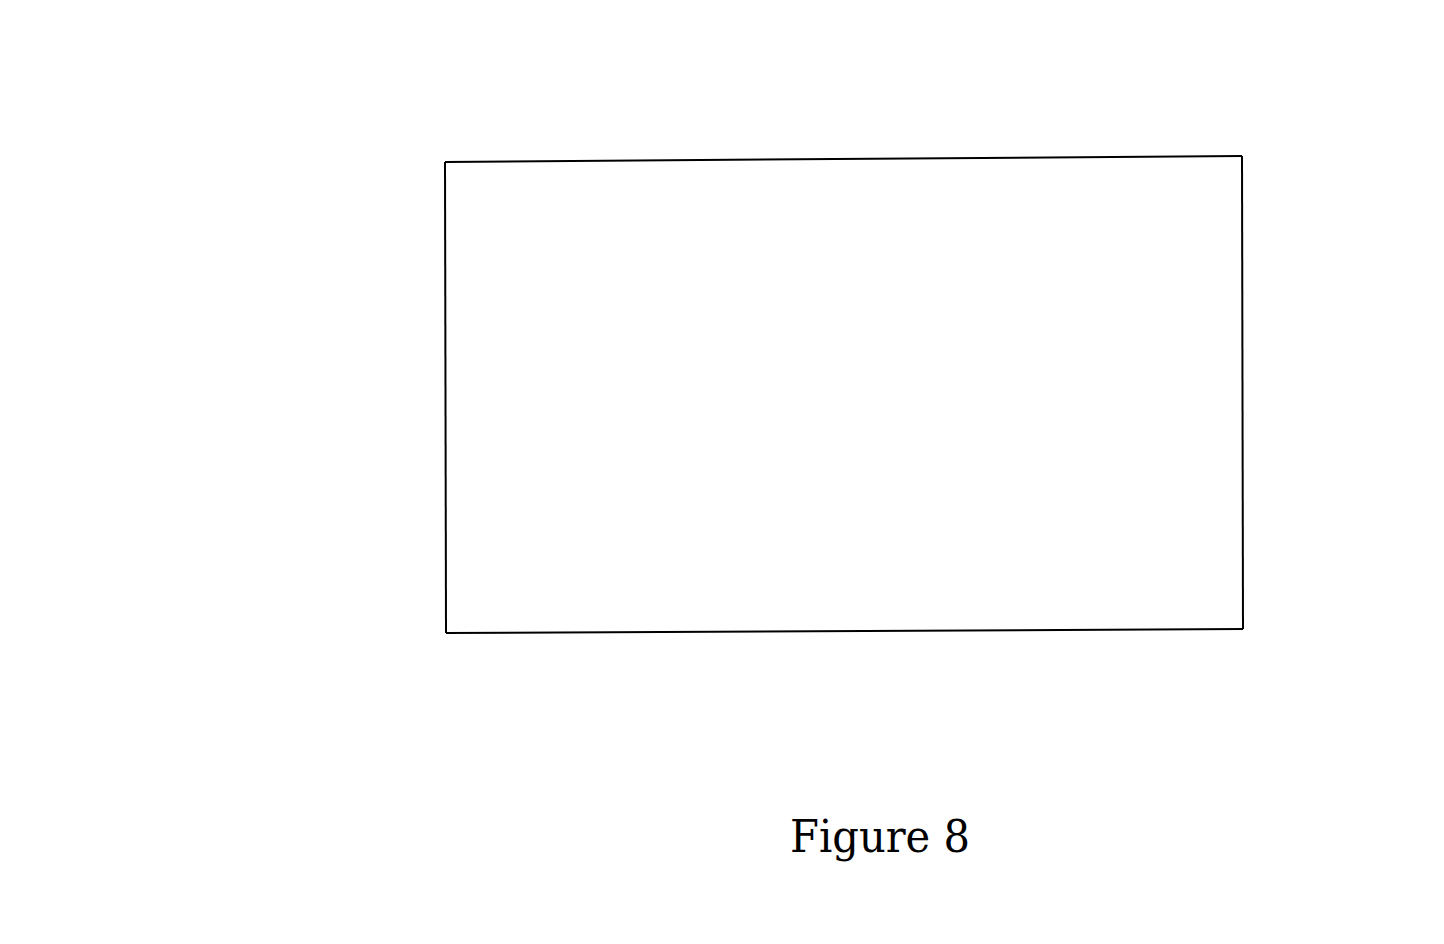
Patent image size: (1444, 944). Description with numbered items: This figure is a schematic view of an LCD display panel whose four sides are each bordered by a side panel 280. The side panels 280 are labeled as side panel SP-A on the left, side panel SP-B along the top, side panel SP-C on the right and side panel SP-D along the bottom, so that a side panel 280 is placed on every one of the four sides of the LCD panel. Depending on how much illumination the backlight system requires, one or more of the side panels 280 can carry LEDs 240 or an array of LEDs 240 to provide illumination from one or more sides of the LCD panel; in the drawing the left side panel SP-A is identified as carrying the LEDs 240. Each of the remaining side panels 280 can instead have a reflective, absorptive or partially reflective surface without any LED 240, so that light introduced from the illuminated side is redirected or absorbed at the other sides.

The side panel 280 is at (761, 398).
The LED 240 is at (272, 397).
The side panel A SP-A is at (446, 498).
The side panel B SP-B is at (790, 158).
The side panel C SP-C is at (1242, 359).
The side panel D SP-D is at (940, 632).